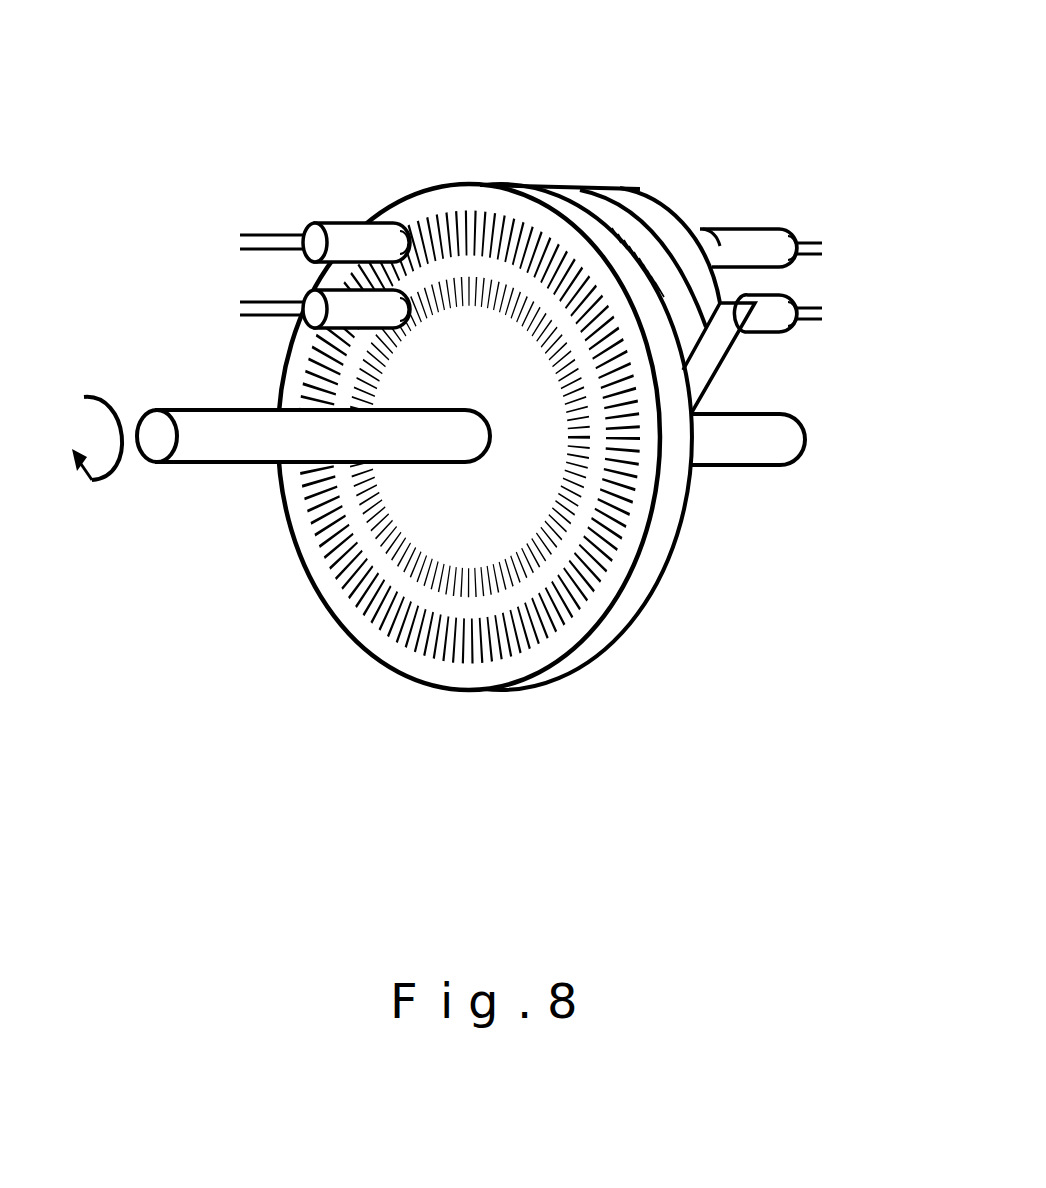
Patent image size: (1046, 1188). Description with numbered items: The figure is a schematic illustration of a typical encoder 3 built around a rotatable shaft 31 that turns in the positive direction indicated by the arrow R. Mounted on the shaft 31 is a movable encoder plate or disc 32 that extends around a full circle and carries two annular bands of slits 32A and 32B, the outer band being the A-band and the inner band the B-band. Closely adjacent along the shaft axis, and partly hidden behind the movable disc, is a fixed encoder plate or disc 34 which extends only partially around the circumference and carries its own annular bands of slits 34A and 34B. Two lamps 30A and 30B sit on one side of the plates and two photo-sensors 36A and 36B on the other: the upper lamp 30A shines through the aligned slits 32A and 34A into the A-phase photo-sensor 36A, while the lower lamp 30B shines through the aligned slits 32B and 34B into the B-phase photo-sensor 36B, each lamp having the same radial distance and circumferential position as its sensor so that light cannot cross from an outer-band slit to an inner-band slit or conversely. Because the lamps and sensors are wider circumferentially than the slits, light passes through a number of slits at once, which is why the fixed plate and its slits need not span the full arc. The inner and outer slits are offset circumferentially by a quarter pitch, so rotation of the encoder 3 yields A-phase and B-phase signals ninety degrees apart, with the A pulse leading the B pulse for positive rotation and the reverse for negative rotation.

The encoder 3 is at (491, 435).
The lamp 30A is at (333, 222).
The lamp 30B is at (330, 291).
The rotatable shaft 31 is at (223, 437).
The movable encoder plate or disc 32 is at (469, 435).
The annular band of slits 32A is at (460, 222).
The annular band of slits 32B is at (490, 293).
The fixed encoder plate or disc 34 is at (675, 384).
The annular band of slits 34A is at (625, 240).
The annular band of slits 34B is at (673, 207).
The photo-sensor 36A is at (760, 248).
The photo-sensor 36B is at (772, 305).
The arrow R is at (100, 388).